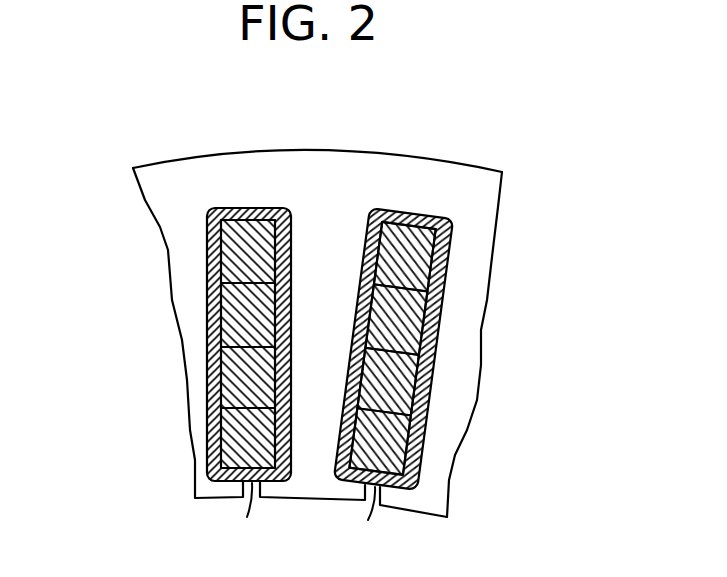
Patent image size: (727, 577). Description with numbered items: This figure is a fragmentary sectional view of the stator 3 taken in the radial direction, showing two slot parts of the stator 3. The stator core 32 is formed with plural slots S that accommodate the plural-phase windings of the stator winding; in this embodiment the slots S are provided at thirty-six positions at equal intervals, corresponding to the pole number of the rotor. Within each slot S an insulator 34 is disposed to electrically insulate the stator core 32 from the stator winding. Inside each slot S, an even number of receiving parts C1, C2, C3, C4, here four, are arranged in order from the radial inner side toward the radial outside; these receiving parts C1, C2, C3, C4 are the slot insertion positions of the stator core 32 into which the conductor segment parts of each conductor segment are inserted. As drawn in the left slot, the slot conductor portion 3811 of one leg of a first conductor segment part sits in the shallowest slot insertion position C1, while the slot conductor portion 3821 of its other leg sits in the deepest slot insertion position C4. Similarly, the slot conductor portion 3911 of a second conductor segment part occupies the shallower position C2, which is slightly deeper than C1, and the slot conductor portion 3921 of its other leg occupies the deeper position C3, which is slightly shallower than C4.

The stator 3 is at (407, 141).
The stator core 32 is at (327, 165).
The insulator 34 is at (227, 220).
The receiving part (slot insertion position) C1 is at (216, 432).
The receiving part (slot insertion position) C2 is at (216, 373).
The receiving part (slot insertion position) C3 is at (212, 308).
The receiving part (slot insertion position) C4 is at (212, 250).
The slot conductor portion 3811 is at (392, 443).
The slot conductor portion 3911 is at (404, 383).
The slot conductor portion 3921 is at (410, 325).
The slot conductor portion 3821 is at (417, 257).
The slot S is at (306, 516).